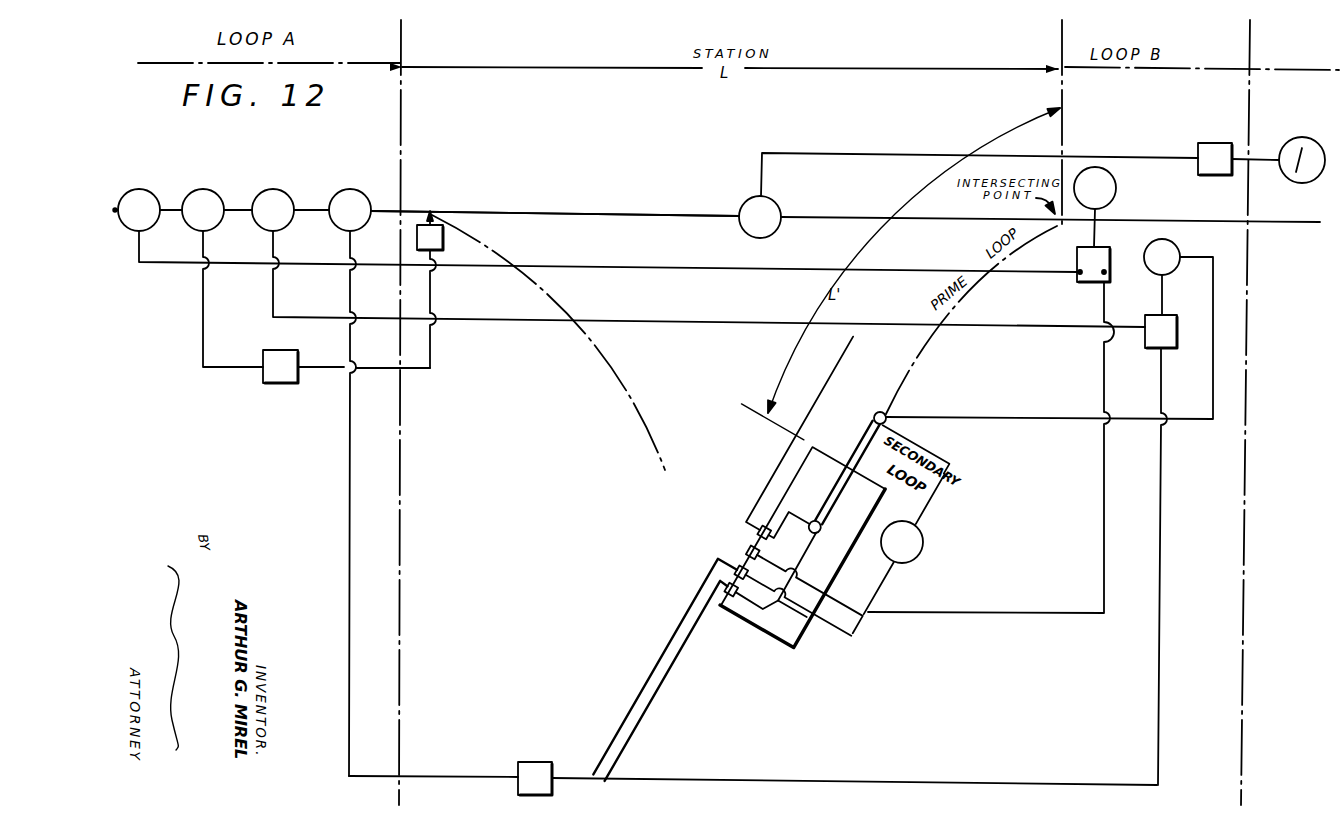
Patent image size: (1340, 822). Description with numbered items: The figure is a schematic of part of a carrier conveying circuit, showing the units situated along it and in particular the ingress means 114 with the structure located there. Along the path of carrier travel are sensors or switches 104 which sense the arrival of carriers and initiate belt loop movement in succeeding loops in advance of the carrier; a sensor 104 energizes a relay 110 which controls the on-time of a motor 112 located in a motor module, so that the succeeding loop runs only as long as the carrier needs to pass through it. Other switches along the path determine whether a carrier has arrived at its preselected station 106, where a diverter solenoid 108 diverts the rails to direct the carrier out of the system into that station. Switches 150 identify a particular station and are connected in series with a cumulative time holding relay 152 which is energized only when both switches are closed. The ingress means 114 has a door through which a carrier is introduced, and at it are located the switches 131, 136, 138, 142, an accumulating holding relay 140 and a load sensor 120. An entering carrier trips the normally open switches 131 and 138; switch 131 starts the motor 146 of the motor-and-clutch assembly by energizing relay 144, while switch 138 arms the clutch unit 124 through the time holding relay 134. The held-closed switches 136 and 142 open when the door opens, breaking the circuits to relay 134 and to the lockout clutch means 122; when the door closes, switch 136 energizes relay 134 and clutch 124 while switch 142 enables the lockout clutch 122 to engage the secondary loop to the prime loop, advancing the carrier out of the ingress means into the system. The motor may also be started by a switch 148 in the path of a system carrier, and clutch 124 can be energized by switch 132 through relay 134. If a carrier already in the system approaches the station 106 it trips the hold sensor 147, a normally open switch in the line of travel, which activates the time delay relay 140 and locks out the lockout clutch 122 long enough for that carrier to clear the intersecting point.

The sensor 104 is at (743, 234).
The station 106 is at (640, 209).
The diverter solenoid 108 is at (443, 240).
The relay 110 is at (1205, 143).
The motor 112 is at (1311, 138).
The ingress means 114 is at (803, 637).
The load sensor 120 is at (922, 552).
The lockout clutch means 122 is at (888, 416).
The clutch unit 124 is at (1180, 254).
The switch 131 is at (758, 555).
The switch 132 is at (280, 190).
The time holding relay 134 is at (1152, 318).
The switch 136 is at (740, 605).
The switch 138 is at (768, 535).
The accumulating holding relay 140 is at (518, 762).
The switch 142 is at (746, 574).
The relay 144 is at (1125, 245).
The motor 146 is at (1117, 188).
The hold sensor 147 is at (364, 180).
The switch 148 is at (146, 190).
The switch 150 is at (210, 190).
The cumulative time holding relay 152 is at (263, 384).